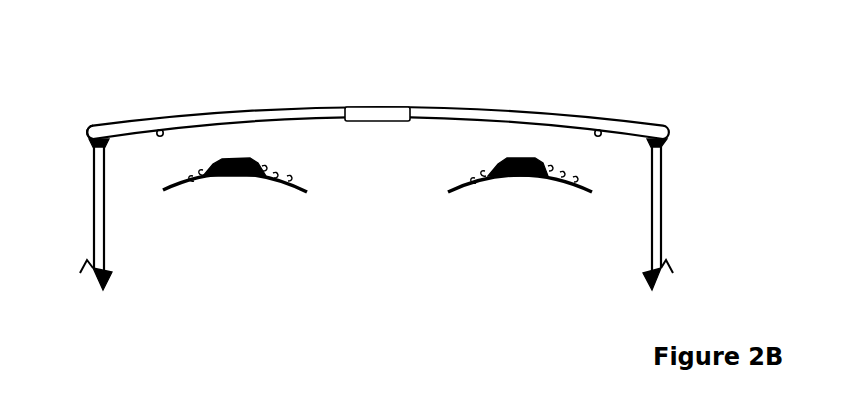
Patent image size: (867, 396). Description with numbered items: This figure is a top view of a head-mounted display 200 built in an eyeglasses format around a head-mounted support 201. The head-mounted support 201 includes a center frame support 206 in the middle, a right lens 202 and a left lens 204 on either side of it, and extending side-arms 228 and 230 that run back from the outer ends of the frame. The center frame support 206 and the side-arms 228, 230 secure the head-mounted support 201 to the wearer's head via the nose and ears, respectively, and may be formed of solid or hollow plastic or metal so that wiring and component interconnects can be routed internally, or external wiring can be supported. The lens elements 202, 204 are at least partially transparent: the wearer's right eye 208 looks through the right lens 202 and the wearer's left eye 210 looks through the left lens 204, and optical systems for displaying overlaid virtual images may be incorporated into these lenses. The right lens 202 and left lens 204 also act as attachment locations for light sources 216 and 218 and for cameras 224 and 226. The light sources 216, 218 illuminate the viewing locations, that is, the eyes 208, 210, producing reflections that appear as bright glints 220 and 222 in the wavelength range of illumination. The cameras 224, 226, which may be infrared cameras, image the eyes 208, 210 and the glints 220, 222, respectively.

The head-mounted display 200 is at (377, 204).
The head-mounted support 201 is at (325, 109).
The right lens 202 is at (580, 118).
The left lens 204 is at (184, 113).
The center frame support 206 is at (372, 107).
The right eye 208 is at (495, 163).
The left eye 210 is at (262, 155).
The light source 216 is at (599, 137).
The light source 218 is at (161, 137).
The glint 220 is at (537, 159).
The glint 222 is at (220, 157).
The camera 224 is at (647, 143).
The camera 226 is at (104, 146).
The side-arm 228 is at (650, 230).
The side-arm 230 is at (110, 223).